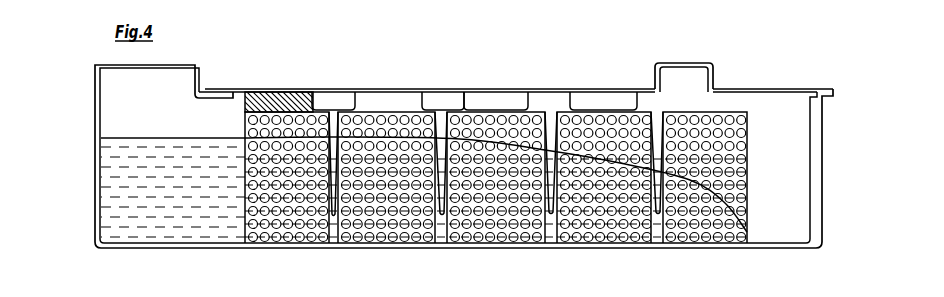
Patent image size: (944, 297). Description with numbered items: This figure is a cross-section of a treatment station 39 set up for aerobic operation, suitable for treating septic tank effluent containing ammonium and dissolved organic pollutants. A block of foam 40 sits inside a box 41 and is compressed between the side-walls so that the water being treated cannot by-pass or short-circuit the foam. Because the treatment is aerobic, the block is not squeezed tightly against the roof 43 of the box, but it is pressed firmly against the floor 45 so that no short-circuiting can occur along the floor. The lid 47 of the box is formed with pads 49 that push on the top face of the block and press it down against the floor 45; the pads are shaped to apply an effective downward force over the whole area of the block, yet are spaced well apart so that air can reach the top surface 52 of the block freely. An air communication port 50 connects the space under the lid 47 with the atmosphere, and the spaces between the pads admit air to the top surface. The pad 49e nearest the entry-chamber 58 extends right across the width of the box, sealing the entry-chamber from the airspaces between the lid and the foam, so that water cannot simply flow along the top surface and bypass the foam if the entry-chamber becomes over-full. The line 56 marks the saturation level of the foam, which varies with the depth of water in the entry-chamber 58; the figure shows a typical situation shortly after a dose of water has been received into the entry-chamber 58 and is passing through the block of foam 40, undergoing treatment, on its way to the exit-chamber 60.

The treatment station 39 is at (738, 87).
The block of foam 40 is at (617, 120).
The box 41 is at (91, 127).
The roof 43 is at (326, 89).
The floor 45 is at (118, 250).
The lid 47 is at (449, 90).
The pads 49 is at (587, 102).
The pad nearest the entry-chamber 49e is at (290, 100).
The air communication port 50 is at (660, 66).
The top surface 52 is at (435, 111).
The saturation level 56 is at (726, 199).
The entry-chamber 58 is at (158, 130).
The exit-chamber 60 is at (773, 172).